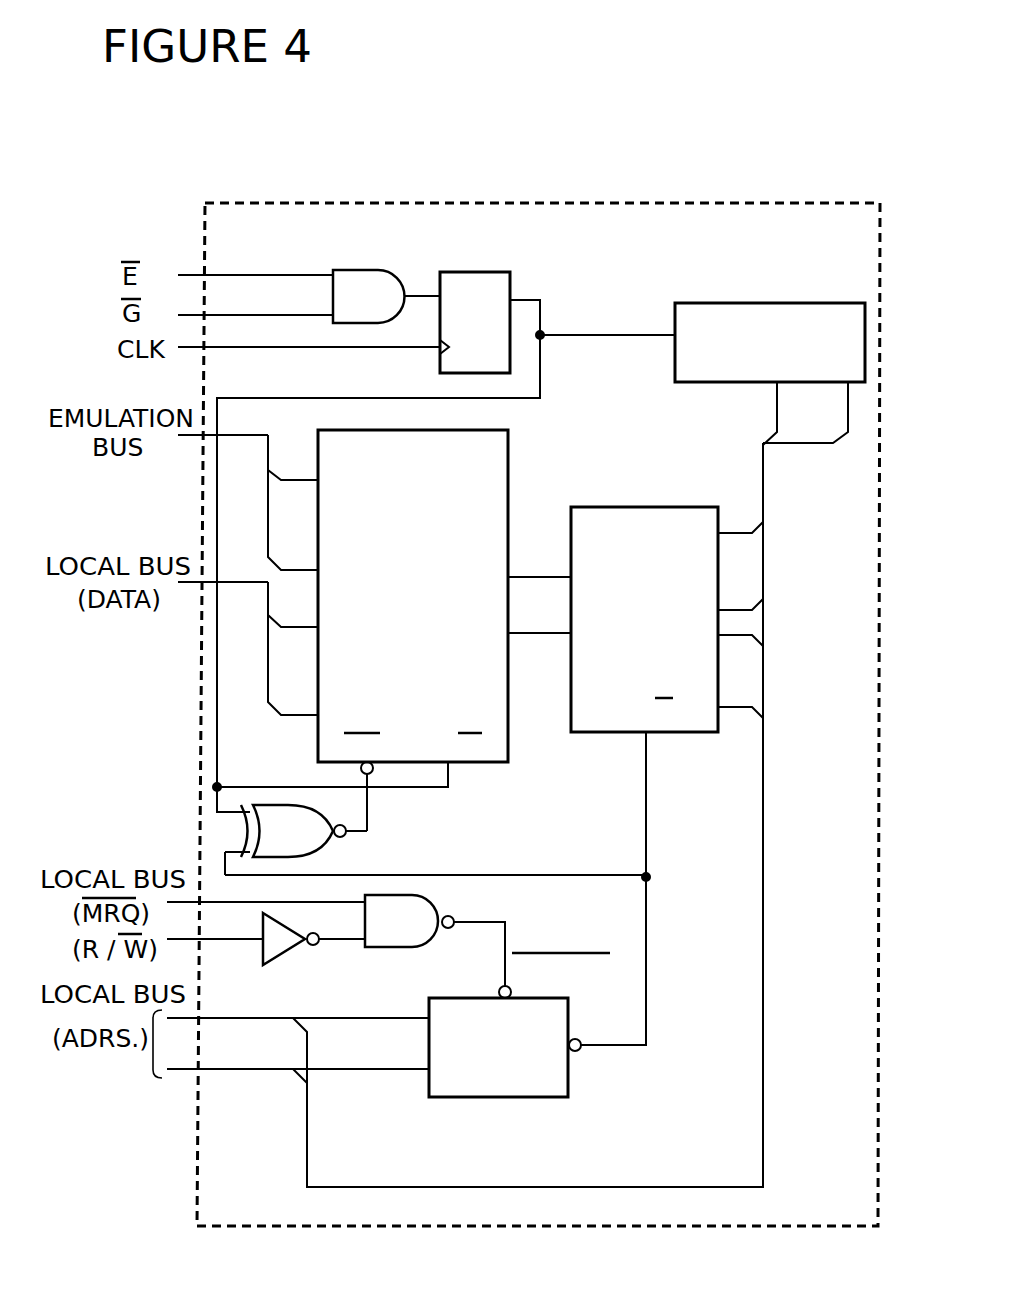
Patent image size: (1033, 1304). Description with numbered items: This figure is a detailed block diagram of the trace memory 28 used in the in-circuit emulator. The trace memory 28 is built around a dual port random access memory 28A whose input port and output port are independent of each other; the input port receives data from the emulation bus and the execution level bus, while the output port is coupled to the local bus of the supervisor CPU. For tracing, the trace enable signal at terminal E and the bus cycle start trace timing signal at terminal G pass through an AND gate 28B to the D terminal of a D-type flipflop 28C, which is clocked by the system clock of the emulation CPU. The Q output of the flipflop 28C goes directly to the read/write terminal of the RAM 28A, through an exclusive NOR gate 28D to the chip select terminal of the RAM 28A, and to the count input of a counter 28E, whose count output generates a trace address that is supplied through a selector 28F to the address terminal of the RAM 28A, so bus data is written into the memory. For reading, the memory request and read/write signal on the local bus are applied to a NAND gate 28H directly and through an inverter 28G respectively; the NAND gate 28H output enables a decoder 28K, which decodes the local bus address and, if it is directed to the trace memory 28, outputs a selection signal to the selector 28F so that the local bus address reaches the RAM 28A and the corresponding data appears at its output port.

The trace memory 28 is at (655, 203).
The dual port random access memory 28A is at (510, 485).
The AND gate 28B is at (365, 270).
The D-type flipflop 28C is at (510, 285).
The exclusive NOR gate 28D is at (310, 855).
The counter 28E is at (757, 303).
The selector 28F is at (650, 507).
The inverter 28G is at (323, 975).
The NAND gate 28H is at (425, 895).
The decoder 28K is at (492, 1097).